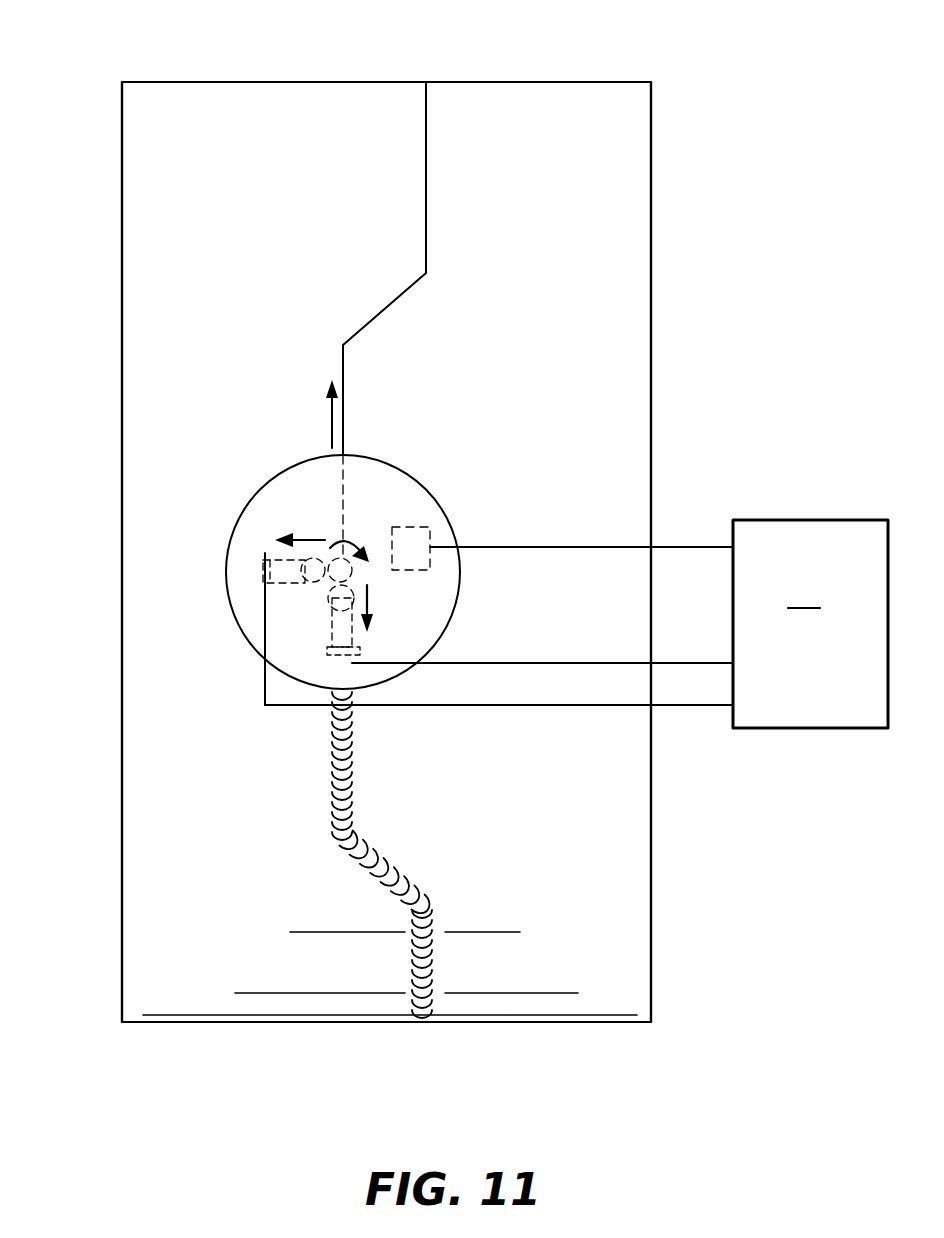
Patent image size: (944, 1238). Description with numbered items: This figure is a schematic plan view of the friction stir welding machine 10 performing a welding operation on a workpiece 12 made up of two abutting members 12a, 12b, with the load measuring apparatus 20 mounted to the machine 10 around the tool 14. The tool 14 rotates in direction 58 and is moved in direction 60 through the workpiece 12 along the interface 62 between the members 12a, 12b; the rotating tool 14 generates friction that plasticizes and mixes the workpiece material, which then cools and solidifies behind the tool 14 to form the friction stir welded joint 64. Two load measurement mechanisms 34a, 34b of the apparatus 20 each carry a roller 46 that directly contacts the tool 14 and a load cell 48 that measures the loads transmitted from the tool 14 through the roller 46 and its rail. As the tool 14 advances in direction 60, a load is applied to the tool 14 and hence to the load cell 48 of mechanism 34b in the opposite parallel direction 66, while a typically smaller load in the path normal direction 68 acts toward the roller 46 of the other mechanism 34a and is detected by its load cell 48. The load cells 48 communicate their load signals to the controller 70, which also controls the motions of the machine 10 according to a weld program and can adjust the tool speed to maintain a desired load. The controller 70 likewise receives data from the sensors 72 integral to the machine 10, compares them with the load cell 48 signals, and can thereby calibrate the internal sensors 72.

The friction stir welding machine 10 is at (427, 487).
The workpiece 12 is at (662, 88).
The first member of the workpiece 12a is at (148, 150).
The second member of the workpiece 12b is at (630, 208).
The tool 14 is at (276, 600).
The apparatus 20 is at (252, 553).
The load measurement mechanism 34a is at (265, 592).
The load measurement mechanism 34b is at (312, 636).
The roller 46 is at (312, 556).
The load cell 48 is at (333, 655).
The direction of rotation 58 is at (357, 548).
The direction of tool movement 60 is at (332, 415).
The interface 62 is at (426, 100).
The friction stir welded joint 64 is at (432, 950).
The opposite parallel direction 66 is at (368, 597).
The path normal direction 68 is at (300, 540).
The controller 70 is at (576, 624).
The sensors 72 is at (430, 527).